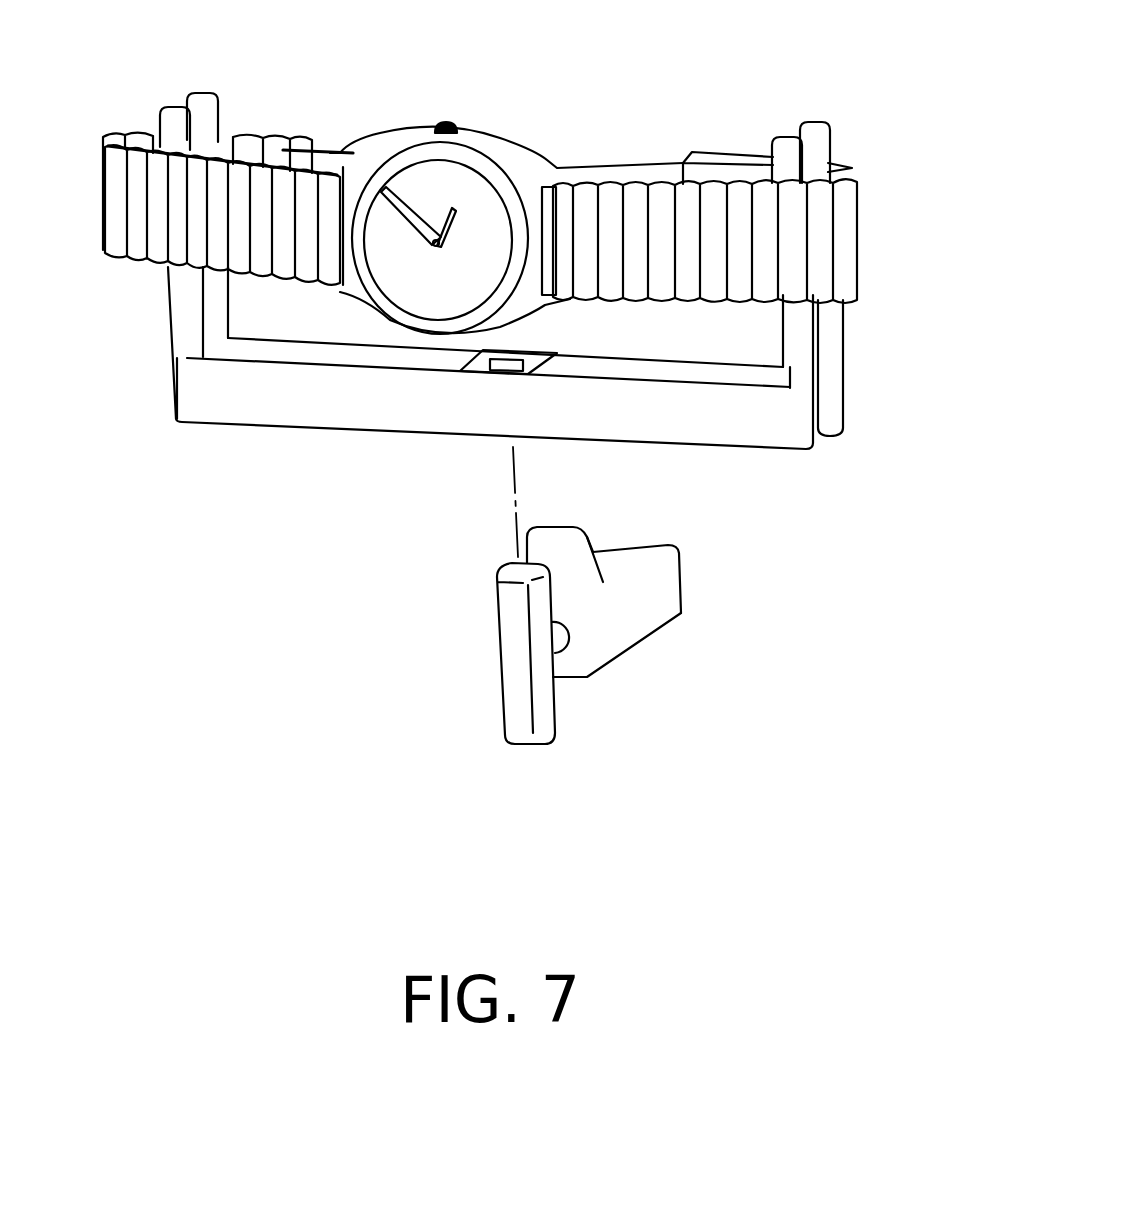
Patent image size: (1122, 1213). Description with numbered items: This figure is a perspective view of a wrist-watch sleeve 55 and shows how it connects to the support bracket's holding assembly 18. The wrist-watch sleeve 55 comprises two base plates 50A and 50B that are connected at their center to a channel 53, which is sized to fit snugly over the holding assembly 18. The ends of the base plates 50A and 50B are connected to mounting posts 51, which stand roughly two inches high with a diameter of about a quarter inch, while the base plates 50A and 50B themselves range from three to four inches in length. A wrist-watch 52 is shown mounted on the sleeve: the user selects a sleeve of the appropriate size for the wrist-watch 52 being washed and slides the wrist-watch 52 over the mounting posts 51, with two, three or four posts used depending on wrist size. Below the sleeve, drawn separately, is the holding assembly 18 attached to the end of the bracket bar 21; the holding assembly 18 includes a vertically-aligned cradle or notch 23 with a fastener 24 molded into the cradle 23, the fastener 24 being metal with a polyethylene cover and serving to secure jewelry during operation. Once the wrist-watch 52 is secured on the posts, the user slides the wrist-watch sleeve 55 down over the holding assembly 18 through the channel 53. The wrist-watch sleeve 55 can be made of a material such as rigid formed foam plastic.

The holding assembly 18 is at (562, 647).
The bracket bar 21 is at (607, 633).
The cradle 23 is at (565, 580).
The fastener 24 is at (565, 535).
The base plate 50A is at (747, 425).
The base plate 50B is at (293, 352).
The mounting posts 51 is at (818, 140).
The wrist-watch 52 is at (492, 153).
The channel 53 is at (507, 363).
The wrist-watch sleeve 55 is at (172, 399).